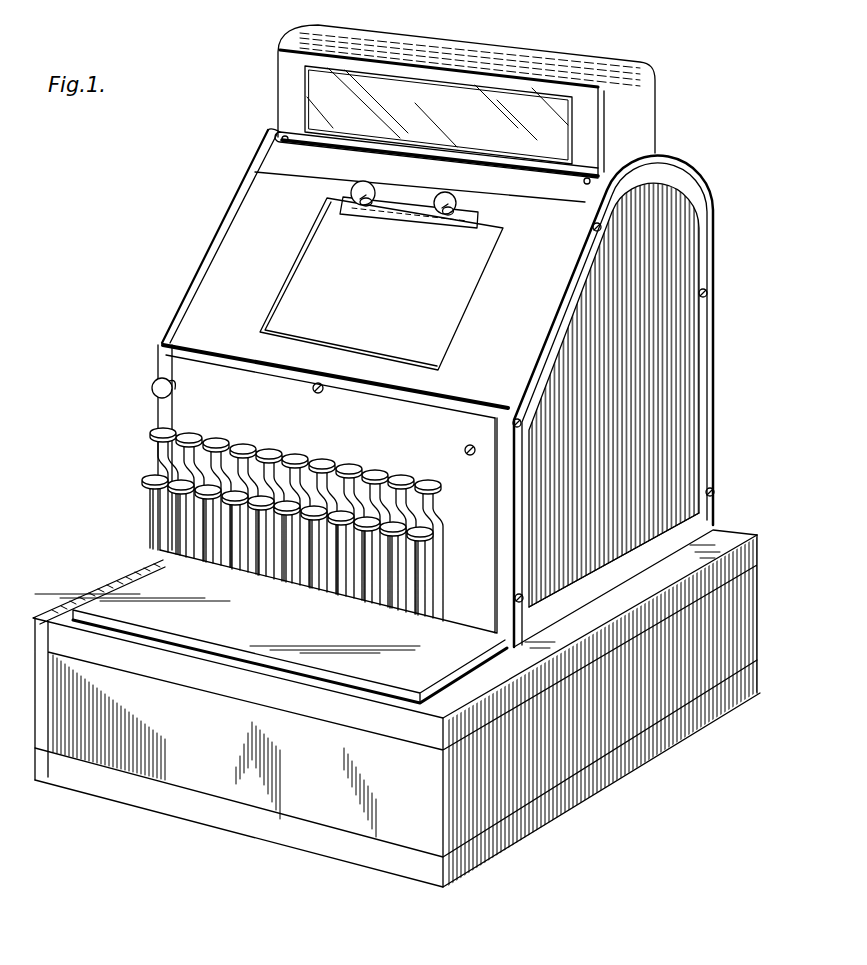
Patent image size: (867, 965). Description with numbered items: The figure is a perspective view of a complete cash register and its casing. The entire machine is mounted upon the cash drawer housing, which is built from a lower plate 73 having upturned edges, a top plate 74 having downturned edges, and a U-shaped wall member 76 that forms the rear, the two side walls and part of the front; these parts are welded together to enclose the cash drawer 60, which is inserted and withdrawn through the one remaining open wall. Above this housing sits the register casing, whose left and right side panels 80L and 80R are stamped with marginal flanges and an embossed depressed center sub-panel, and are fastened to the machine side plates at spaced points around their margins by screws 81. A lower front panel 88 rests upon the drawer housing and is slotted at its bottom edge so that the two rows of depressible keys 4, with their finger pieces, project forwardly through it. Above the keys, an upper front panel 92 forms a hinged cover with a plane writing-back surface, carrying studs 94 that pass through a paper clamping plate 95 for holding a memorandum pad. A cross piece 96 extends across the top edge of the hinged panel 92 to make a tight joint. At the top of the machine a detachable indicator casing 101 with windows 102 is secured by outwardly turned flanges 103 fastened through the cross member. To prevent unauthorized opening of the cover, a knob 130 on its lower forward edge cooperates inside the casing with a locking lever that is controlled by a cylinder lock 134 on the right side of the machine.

The indicator casing 101 is at (523, 53).
The windows 102 is at (328, 86).
The flanges 103 is at (565, 178).
The cross piece 96 is at (502, 187).
The left side panel 80L is at (252, 165).
The right side panel 80R is at (706, 194).
The upper front panel 92 is at (235, 260).
The paper clamping plate 95 is at (412, 203).
The studs 94 is at (430, 218).
The screws 81 is at (592, 228).
The lower front panel 88 is at (193, 410).
The depressible keys 4 is at (153, 478).
The knob 130 is at (320, 393).
The cylinder lock 134 is at (465, 450).
The top plate 74 is at (60, 612).
The U-shaped wall member 76 is at (46, 695).
The cash drawer 60 is at (192, 757).
The lower plate 73 is at (272, 832).